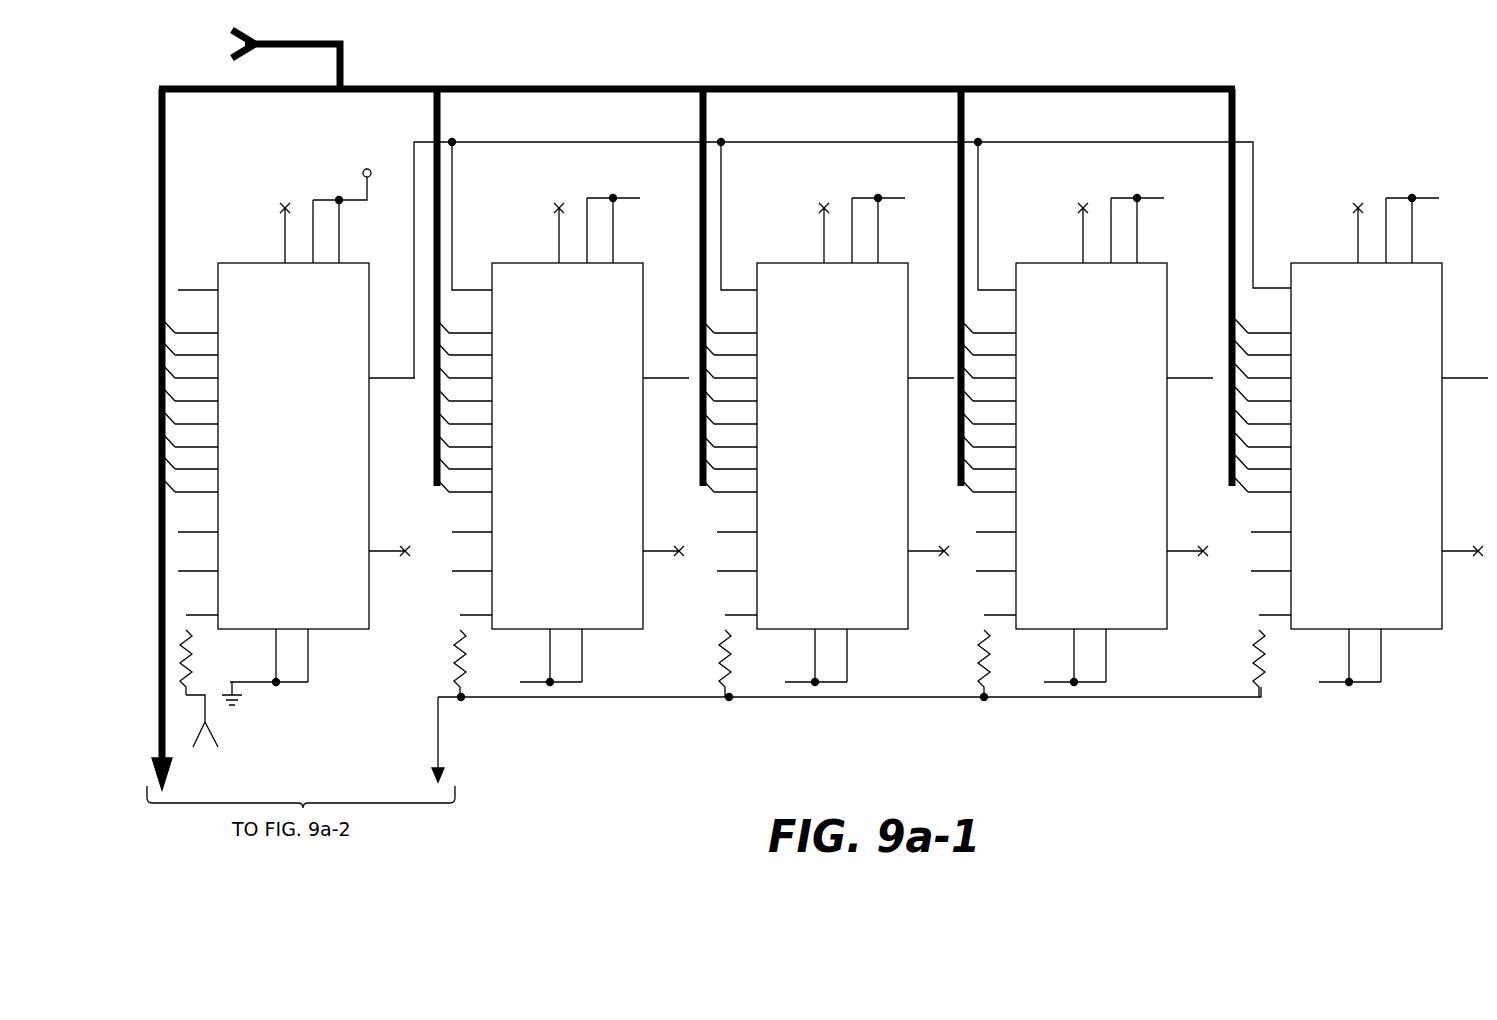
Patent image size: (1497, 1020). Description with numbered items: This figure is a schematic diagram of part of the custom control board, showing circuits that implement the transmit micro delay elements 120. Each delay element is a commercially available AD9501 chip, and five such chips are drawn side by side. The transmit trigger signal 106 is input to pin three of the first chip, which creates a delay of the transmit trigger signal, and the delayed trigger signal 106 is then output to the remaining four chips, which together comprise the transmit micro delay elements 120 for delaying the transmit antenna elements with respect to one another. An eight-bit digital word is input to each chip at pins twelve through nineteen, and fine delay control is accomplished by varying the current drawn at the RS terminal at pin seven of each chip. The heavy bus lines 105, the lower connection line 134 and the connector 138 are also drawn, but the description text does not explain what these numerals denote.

The data bus 105 is at (166, 748).
The transmit trigger signal 106 is at (178, 288).
The transmit micro delay element 120 is at (584, 445).
The reset line 134 is at (455, 692).
The connector 138 is at (210, 724).